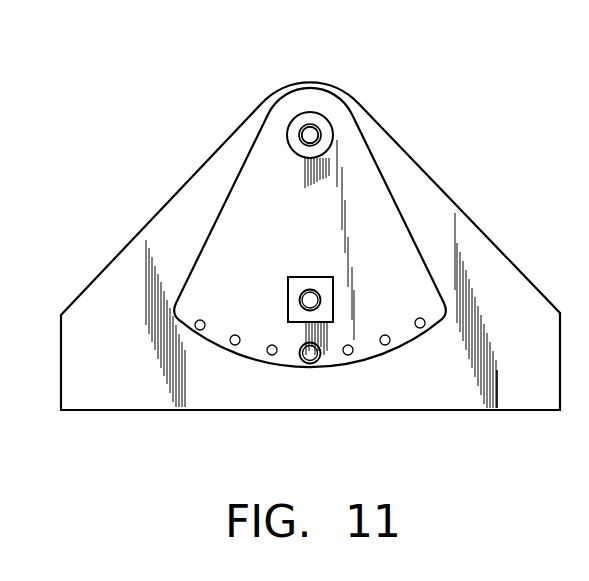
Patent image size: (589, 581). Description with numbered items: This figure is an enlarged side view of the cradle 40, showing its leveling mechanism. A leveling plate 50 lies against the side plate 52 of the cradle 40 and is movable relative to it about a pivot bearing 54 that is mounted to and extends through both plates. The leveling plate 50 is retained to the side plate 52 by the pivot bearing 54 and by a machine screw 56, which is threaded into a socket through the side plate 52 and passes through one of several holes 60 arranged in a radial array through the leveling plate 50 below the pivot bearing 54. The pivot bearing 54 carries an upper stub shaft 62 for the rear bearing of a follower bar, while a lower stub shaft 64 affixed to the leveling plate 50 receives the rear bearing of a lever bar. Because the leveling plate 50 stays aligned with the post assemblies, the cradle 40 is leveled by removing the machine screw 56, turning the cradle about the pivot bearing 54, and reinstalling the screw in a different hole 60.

The cradle 40 is at (485, 72).
The leveling plate 50 is at (413, 237).
The side plate 52 is at (413, 163).
The pivot bearing 54 is at (323, 118).
The machine screw 56 is at (311, 364).
The holes 60 is at (200, 330).
The upper stub shaft 62 is at (307, 125).
The lower stub shaft 64 is at (298, 293).